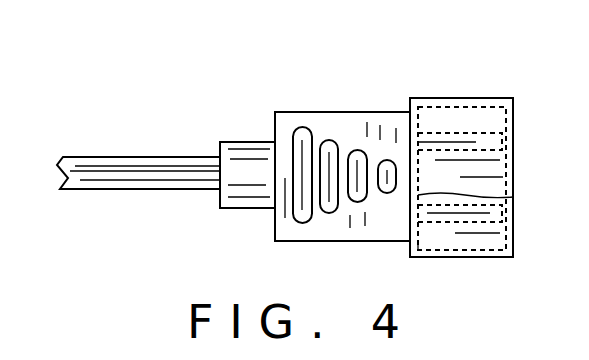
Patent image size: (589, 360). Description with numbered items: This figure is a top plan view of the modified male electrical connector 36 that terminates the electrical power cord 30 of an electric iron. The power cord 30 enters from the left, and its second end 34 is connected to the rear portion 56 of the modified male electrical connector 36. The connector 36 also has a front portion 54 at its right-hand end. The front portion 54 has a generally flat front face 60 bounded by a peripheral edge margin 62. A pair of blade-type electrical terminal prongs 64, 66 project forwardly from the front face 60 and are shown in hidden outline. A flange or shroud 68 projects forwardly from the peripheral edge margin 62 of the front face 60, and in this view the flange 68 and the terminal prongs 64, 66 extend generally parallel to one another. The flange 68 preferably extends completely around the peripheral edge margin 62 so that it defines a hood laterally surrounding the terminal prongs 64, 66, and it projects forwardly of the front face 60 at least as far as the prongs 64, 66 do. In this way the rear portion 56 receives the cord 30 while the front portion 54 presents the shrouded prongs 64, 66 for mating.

The electrical power cord 30 is at (128, 156).
The second end 34 is at (214, 156).
The modified male electrical connector 36 is at (342, 126).
The front portion 54 is at (488, 162).
The rear portion 56 is at (383, 110).
The front face 60 is at (513, 197).
The peripheral edge margin 62 is at (418, 243).
The electrical terminal prong 64 is at (502, 215).
The electrical terminal prong 66 is at (503, 142).
The flange 68 is at (497, 105).